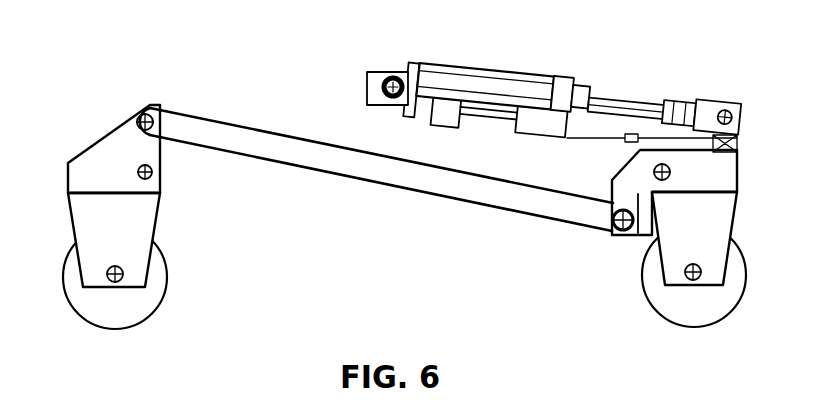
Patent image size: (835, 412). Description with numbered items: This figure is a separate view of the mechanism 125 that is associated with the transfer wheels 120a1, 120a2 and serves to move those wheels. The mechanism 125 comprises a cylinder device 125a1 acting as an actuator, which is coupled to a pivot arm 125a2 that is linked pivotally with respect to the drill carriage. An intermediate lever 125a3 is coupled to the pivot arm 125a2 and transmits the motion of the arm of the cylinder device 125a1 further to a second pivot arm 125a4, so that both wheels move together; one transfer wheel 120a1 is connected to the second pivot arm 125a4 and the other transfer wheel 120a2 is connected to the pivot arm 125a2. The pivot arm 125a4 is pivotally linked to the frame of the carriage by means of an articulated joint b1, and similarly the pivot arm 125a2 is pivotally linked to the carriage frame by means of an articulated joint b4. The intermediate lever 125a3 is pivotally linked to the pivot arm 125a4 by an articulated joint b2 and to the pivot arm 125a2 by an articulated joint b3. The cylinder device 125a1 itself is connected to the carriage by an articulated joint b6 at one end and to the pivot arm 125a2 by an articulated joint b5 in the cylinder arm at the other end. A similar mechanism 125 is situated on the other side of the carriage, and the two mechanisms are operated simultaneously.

The mechanism 125 is at (331, 242).
The transfer wheel 120a1 is at (88, 315).
The transfer wheel 120a2 is at (717, 317).
The cylinder device 125a1 is at (579, 88).
The pivot arm 125a2 is at (718, 268).
The intermediate lever 125a3 is at (413, 182).
The second pivot arm 125a4 is at (107, 137).
The articulated joint b1 is at (150, 168).
The articulated joint b2 is at (138, 106).
The articulated joint b3 is at (614, 208).
The articulated joint b4 is at (663, 163).
The articulated joint b5 is at (742, 113).
The articulated joint b6 is at (381, 60).